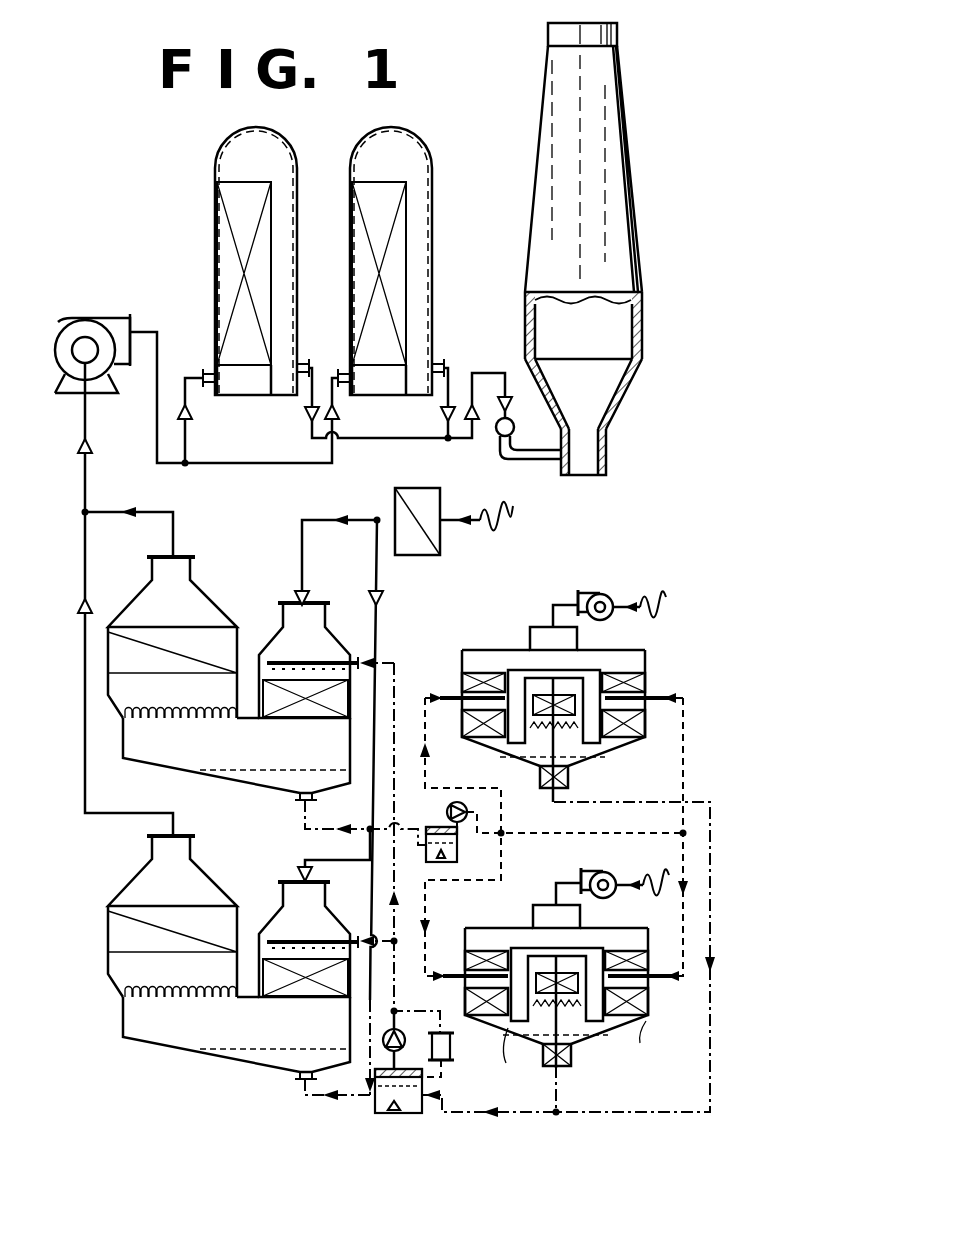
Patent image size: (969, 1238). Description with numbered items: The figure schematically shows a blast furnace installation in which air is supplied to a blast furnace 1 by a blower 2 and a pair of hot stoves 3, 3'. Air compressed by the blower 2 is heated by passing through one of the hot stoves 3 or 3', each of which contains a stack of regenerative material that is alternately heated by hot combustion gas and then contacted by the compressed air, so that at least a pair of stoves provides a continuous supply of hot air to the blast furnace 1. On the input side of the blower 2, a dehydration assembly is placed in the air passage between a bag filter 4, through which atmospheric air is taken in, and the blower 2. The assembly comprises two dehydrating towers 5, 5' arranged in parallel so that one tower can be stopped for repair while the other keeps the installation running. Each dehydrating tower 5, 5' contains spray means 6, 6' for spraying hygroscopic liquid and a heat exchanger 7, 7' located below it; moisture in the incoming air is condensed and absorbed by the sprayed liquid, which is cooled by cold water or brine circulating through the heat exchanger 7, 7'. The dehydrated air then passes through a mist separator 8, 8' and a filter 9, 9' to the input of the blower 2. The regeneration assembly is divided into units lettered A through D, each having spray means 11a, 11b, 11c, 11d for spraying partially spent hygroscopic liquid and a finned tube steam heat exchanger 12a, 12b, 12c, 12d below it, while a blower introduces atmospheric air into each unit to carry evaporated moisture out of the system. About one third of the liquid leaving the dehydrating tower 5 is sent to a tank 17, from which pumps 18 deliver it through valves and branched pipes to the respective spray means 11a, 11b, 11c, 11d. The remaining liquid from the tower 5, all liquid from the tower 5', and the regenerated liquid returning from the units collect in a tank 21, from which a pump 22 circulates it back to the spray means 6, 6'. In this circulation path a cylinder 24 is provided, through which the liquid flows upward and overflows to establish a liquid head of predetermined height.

The blast furnace 1 is at (628, 206).
The blower 2 is at (88, 320).
The hot stove 3 is at (266, 261).
The hot stove 3' is at (405, 261).
The bag filter 4 is at (433, 497).
The dehydrating tower 5 is at (297, 663).
The dehydrating tower 5' is at (296, 942).
The spray means 6 is at (308, 641).
The spray means 6' is at (308, 920).
The heat exchanger 7 is at (304, 721).
The heat exchanger 7' is at (304, 1000).
The mist separator 8 is at (236, 759).
The mist separator 8' is at (236, 1038).
The filter 9 is at (172, 637).
The filter 9' is at (172, 916).
The spray means 11a is at (470, 700).
The spray means 11b is at (640, 701).
The spray means 11c is at (469, 948).
The spray means 11d is at (650, 953).
The heat exchanger 12a is at (471, 738).
The heat exchanger 12b is at (633, 738).
The heat exchanger 12c is at (460, 983).
The heat exchanger 12d is at (655, 987).
The tank 17 is at (458, 848).
The pump 18 is at (466, 806).
The tank 21 is at (376, 1113).
The pump 22 is at (384, 1048).
The cylinder 24 is at (451, 1045).